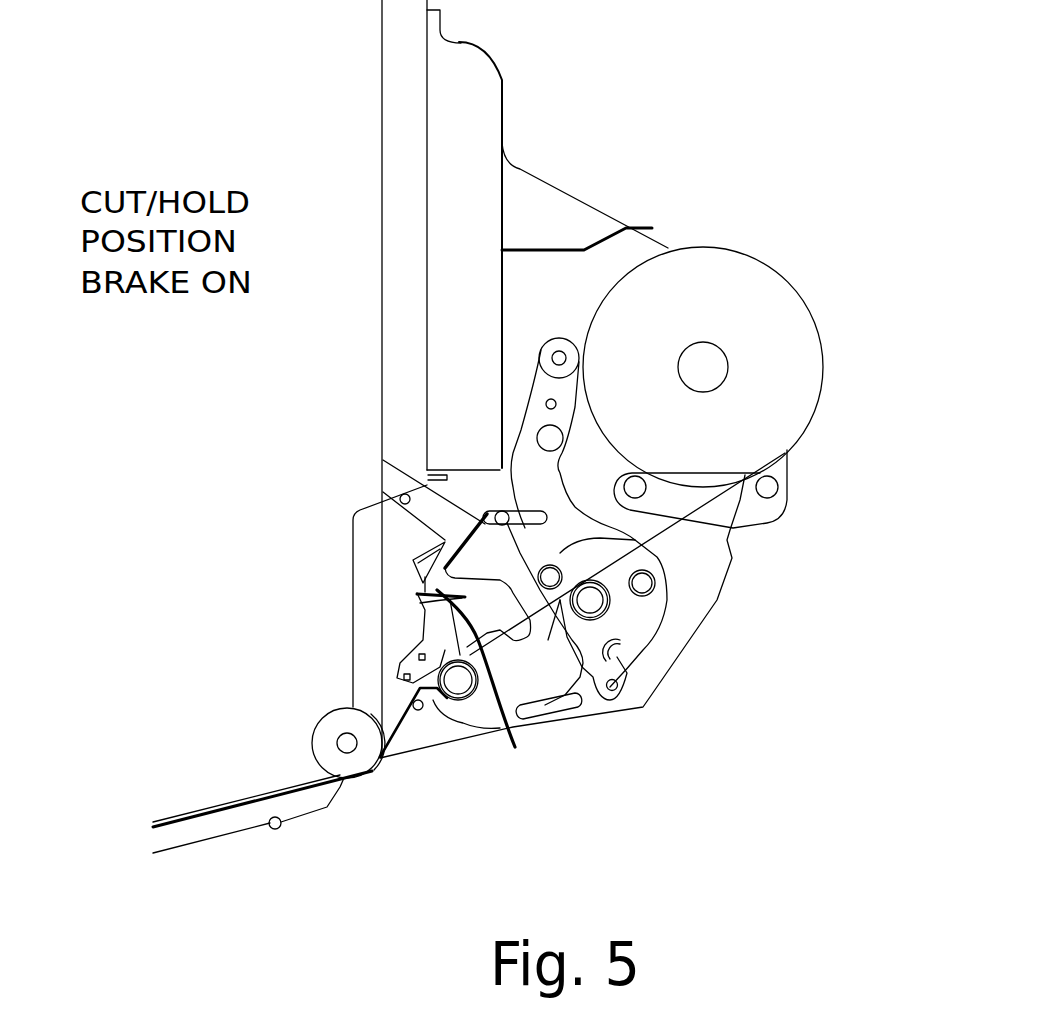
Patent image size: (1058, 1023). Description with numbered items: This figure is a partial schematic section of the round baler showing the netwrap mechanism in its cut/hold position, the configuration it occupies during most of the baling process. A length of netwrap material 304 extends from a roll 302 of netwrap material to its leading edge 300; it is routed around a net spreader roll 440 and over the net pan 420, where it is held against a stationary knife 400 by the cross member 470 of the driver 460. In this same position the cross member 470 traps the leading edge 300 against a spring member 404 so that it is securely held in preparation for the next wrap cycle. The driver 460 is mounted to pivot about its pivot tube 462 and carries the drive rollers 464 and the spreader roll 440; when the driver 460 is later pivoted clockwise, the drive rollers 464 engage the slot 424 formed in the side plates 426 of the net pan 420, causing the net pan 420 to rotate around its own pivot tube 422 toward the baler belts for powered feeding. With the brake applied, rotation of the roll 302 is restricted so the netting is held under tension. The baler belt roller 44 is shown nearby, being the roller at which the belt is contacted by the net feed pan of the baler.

The roll of netwrap material 302 is at (748, 285).
The netwrap material 304 is at (720, 522).
The net spreader roll 440 is at (727, 553).
The pivot tube 462 is at (610, 610).
The drive rollers 464 is at (620, 687).
The net pan 420 is at (428, 484).
The spring member 404 is at (510, 646).
The driver 460 is at (447, 567).
The cross member 470 is at (448, 597).
The leading edge 300 is at (417, 590).
The stationary knife 400 is at (372, 605).
The pivot tube 422 is at (466, 722).
The slot 424 is at (540, 702).
The side plates 426 is at (538, 660).
The roller 44 is at (322, 745).